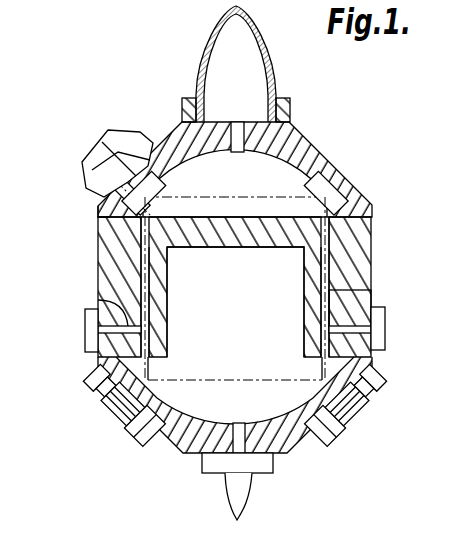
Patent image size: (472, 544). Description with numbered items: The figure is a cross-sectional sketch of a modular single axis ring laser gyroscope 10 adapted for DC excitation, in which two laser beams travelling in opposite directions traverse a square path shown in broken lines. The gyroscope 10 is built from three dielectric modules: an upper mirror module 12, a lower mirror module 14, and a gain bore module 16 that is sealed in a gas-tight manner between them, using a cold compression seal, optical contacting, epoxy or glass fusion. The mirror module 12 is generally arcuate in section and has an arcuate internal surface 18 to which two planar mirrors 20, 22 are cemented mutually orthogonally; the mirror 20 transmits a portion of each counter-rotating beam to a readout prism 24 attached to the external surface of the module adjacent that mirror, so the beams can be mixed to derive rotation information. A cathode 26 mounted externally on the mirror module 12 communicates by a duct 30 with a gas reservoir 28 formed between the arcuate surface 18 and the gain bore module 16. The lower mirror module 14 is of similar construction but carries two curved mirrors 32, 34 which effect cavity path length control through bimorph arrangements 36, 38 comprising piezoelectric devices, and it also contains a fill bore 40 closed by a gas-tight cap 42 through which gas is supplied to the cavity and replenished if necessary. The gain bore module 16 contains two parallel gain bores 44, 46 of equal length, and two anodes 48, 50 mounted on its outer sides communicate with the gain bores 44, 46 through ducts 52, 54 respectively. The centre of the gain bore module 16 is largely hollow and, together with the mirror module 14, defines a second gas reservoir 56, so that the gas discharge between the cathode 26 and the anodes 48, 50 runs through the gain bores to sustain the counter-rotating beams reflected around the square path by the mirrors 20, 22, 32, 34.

The modular ring laser gyroscope 10 is at (93, 86).
The mirror module 12 is at (331, 148).
The mirror module 14 is at (314, 455).
The gain bore module 16 is at (380, 239).
The arcuate internal surface 18 is at (271, 165).
The planar mirror 20 is at (98, 208).
The planar mirror 22 is at (324, 190).
The readout prism 24 is at (113, 138).
The cathode 26 is at (205, 44).
The gas reservoir 28 is at (196, 184).
The duct 30 is at (238, 133).
The curved mirror 32 is at (125, 352).
The curved mirror 34 is at (356, 357).
The bimorph arrangement 36 is at (90, 406).
The bimorph arrangement 38 is at (380, 417).
The fill bore 40 is at (237, 440).
The gas-tight cap 42 is at (241, 488).
The gain bore 44 is at (140, 263).
The gain bore 46 is at (315, 300).
The anode 48 is at (90, 325).
The anode 50 is at (380, 334).
The duct 52 is at (118, 310).
The duct 54 is at (350, 325).
The gas reservoir 56 is at (213, 327).